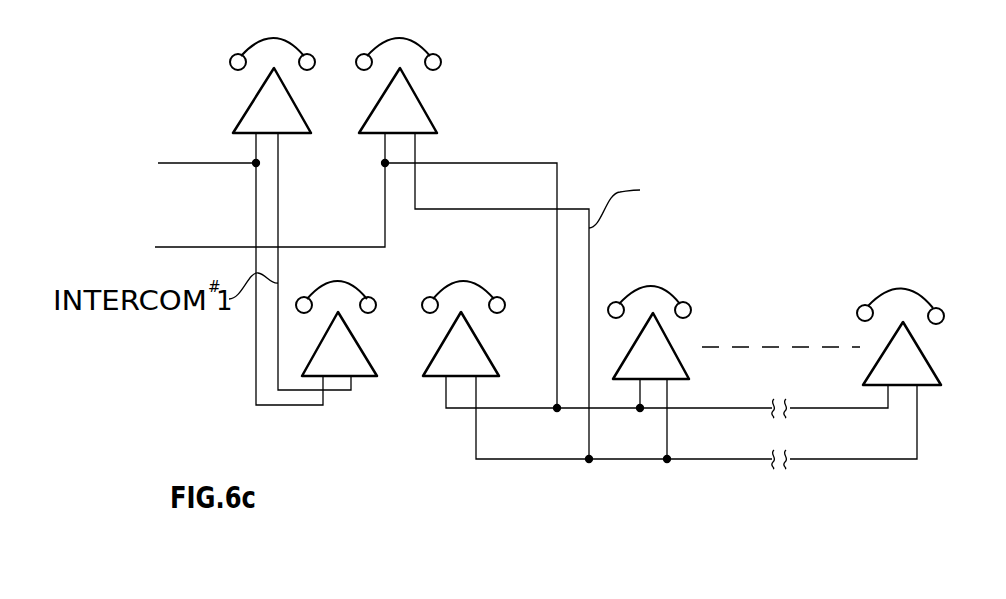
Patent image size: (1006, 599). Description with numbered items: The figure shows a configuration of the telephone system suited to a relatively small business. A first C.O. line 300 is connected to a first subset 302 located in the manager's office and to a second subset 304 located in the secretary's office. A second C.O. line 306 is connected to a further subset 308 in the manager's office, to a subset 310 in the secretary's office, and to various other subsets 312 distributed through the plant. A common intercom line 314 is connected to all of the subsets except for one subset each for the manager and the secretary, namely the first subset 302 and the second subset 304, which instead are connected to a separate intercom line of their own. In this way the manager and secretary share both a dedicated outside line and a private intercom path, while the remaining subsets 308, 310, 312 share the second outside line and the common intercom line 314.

The first C.O. line 300 is at (166, 164).
The first subset 302 is at (258, 95).
The second subset 304 is at (356, 347).
The second C.O. line 306 is at (157, 246).
The subset 308 is at (415, 95).
The subset 310 is at (480, 347).
The other subsets 312 is at (679, 360).
The common intercom line 314 is at (527, 460).